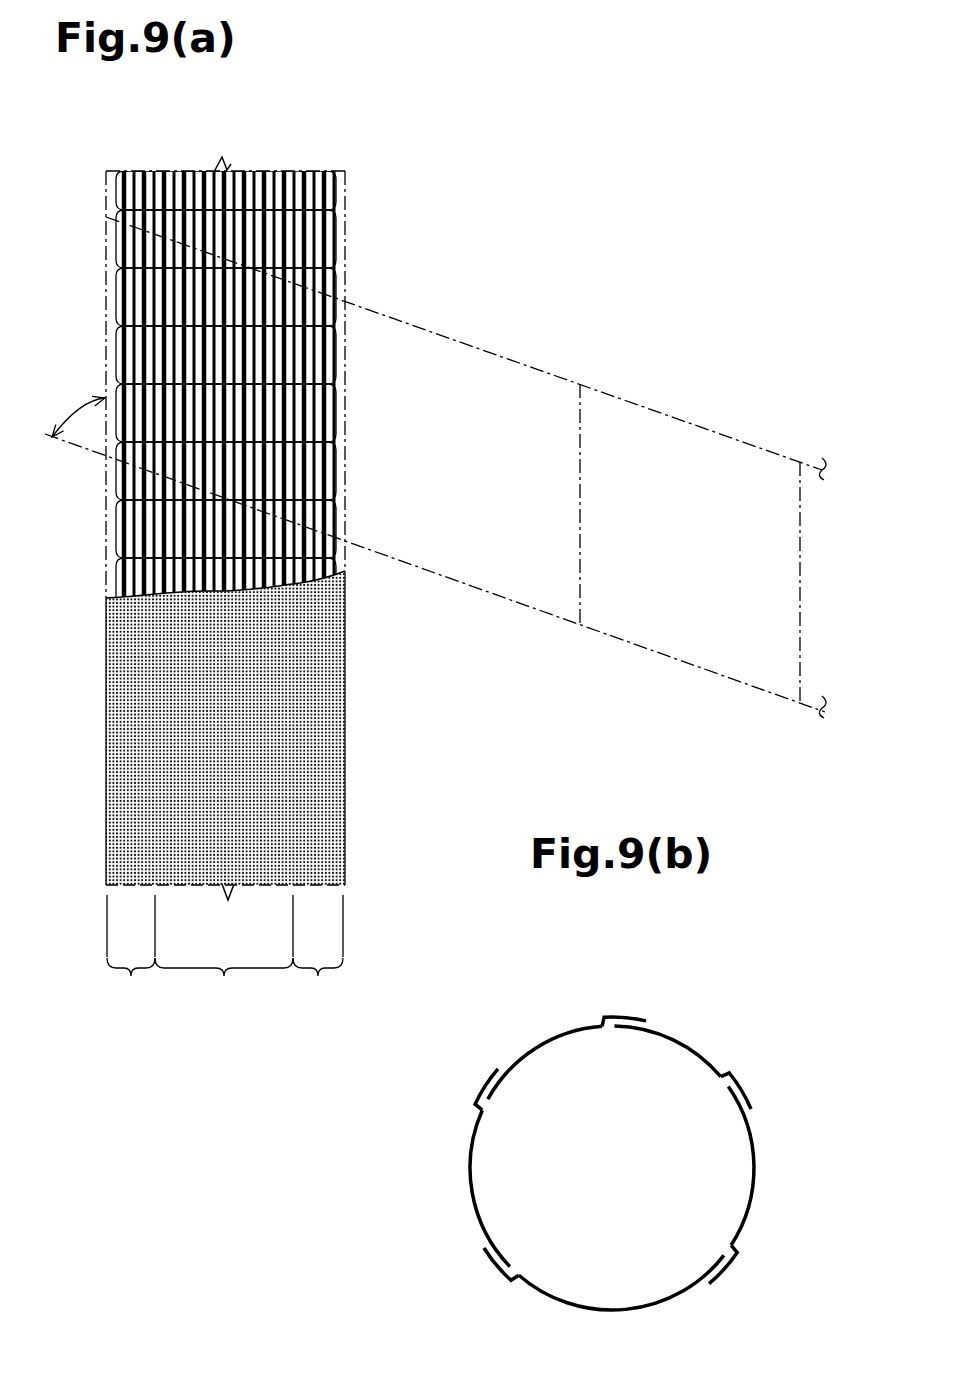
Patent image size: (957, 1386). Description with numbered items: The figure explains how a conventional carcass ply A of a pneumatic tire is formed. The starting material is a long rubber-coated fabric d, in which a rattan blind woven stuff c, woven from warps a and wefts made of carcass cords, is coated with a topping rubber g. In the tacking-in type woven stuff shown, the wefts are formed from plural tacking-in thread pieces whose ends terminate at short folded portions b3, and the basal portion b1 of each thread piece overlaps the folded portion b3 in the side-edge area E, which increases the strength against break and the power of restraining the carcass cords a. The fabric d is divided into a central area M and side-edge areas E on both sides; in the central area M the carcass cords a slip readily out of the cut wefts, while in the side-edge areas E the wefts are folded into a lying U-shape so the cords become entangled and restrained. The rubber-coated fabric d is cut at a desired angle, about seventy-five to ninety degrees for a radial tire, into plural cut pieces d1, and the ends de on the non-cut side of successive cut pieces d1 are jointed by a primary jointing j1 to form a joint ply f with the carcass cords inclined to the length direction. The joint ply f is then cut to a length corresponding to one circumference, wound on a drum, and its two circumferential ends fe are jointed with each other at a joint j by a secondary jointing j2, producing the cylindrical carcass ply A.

In FIG. 9A, the warps a is at (332, 499).
In FIG. 9A, the basal portion b1 is at (278, 212).
In FIG. 9A, the folded portion b3 is at (293, 250).
In FIG. 9A, the rattan blind woven stuff c is at (275, 568).
In FIG. 9A, the topping rubber g is at (330, 745).
In FIG. 9A, the rubber-coated fabric d is at (295, 734).
In FIG. 9A, the cut pieces d1 is at (527, 608).
In FIG. 9A, the ends de is at (580, 415).
In FIG. 9A, the primary jointing j1 is at (635, 326).
In FIG. 9B, the primary jointing j1 is at (750, 1068).
In FIG. 9B, the secondary jointing j2 is at (598, 1008).
In FIG. 9B, the joint j is at (478, 1078).
In FIG. 9B, the joint ply f is at (637, 1108).
In FIG. 9B, the ends of joint ply fe is at (612, 1024).
In FIG. 9B, the carcass ply A is at (766, 1143).
In FIG. 9A, the side-edge area E is at (225, 949).
In FIG. 9A, the central area M is at (224, 982).